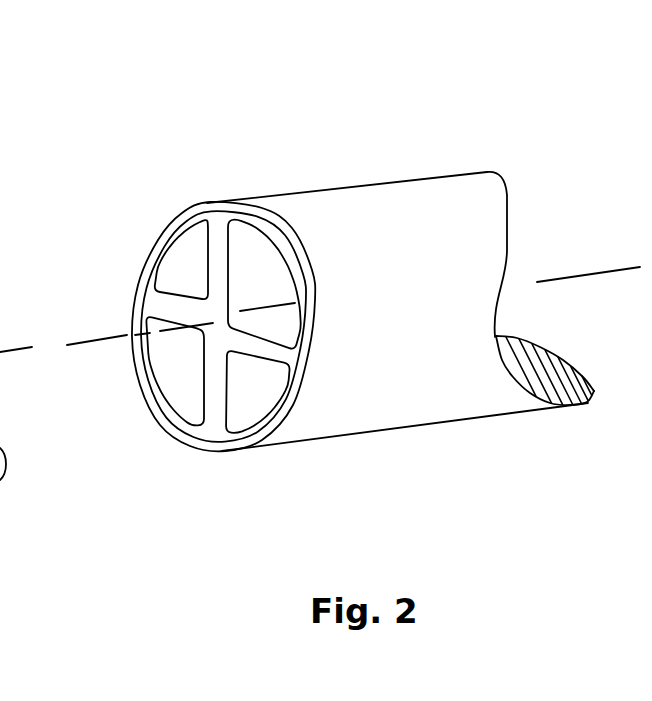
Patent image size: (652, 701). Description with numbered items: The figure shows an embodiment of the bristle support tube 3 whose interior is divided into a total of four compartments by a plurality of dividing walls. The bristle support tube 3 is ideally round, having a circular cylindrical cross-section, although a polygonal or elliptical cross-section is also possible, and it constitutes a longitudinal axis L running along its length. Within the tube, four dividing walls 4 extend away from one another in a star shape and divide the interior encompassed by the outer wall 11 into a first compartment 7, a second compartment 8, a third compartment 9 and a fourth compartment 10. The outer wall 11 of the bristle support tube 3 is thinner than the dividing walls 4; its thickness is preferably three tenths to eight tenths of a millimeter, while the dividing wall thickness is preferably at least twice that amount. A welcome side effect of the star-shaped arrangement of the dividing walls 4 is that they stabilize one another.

The bristle support tube 3 is at (392, 215).
The dividing wall 4 is at (217, 318).
The first compartment 7 is at (267, 270).
The second compartment 8 is at (257, 397).
The third compartment 9 is at (173, 380).
The fourth compartment 10 is at (177, 263).
The outer wall 11 is at (307, 287).
The longitudinal axis L is at (503, 287).